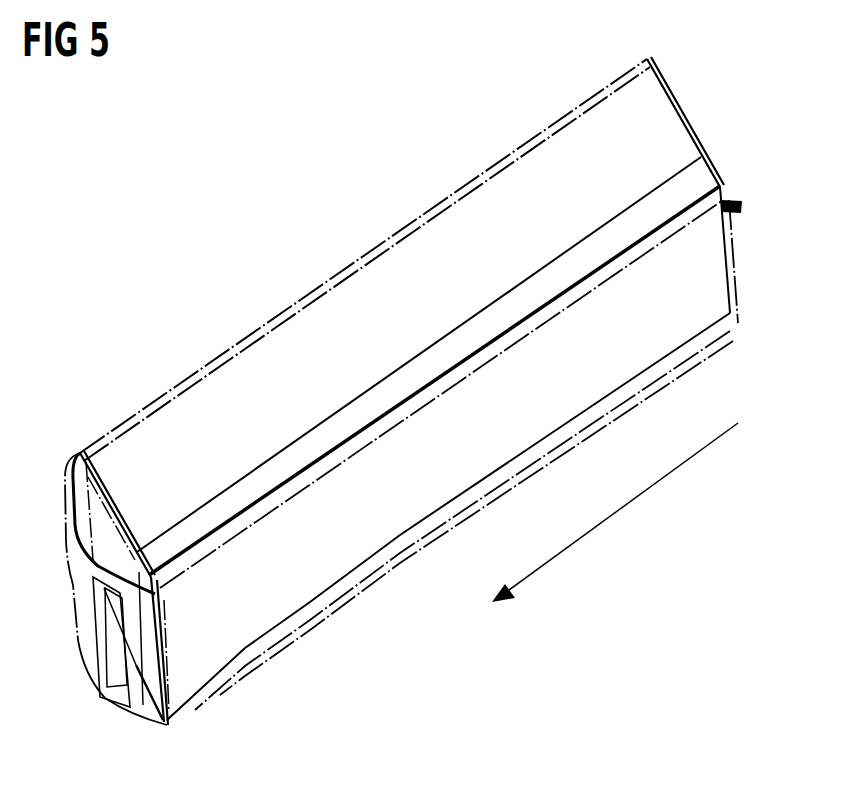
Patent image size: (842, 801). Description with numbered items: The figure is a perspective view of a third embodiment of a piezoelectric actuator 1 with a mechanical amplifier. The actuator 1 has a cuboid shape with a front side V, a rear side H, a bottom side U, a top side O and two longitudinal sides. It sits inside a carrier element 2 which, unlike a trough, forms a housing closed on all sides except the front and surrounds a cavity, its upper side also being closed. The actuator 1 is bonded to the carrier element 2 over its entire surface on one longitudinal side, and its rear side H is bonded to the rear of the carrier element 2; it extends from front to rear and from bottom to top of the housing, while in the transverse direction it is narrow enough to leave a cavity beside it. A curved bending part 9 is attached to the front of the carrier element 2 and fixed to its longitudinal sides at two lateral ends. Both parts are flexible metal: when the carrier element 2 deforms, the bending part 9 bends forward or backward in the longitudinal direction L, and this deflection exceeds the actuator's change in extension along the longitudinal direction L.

The actuator 1 is at (715, 168).
The carrier element 2 is at (720, 287).
The bending part 9 is at (72, 578).
The rear side H is at (742, 206).
The top side O is at (342, 423).
The front side V is at (143, 612).
The bottom side U is at (232, 658).
The longitudinal direction L is at (617, 513).